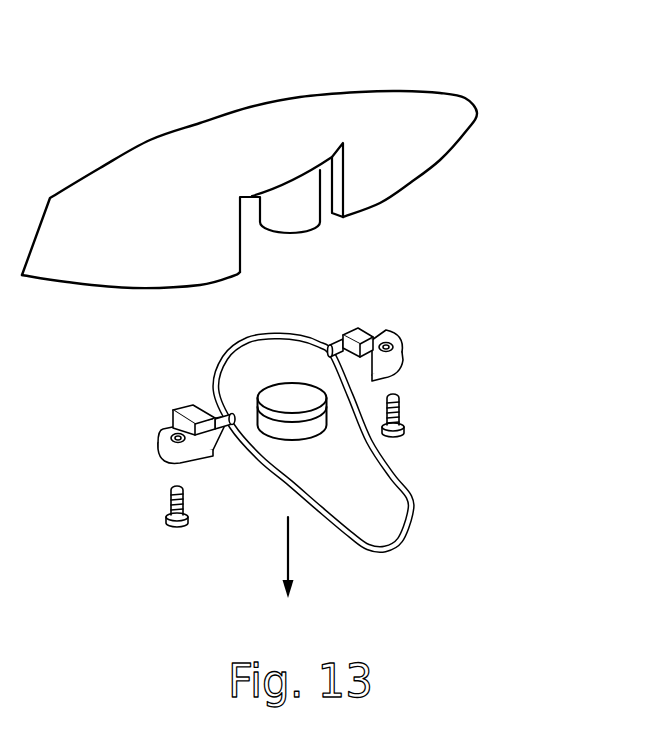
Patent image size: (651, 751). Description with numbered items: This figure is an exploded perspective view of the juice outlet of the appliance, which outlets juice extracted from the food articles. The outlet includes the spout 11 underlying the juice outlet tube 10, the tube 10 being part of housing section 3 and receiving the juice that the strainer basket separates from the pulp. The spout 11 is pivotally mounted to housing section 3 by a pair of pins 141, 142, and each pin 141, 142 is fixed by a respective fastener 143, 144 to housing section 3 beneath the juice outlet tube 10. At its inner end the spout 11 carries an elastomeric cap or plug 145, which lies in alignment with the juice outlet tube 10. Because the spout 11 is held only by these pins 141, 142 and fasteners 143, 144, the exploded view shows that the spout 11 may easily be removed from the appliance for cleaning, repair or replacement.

The housing section 3 is at (425, 152).
The juice outlet tube 10 is at (302, 202).
The spout 11 is at (410, 493).
The pin 141 is at (218, 418).
The pin 142 is at (327, 340).
The fastener 143 is at (166, 514).
The fastener 144 is at (402, 413).
The elastomeric cap or plug 145 is at (292, 397).